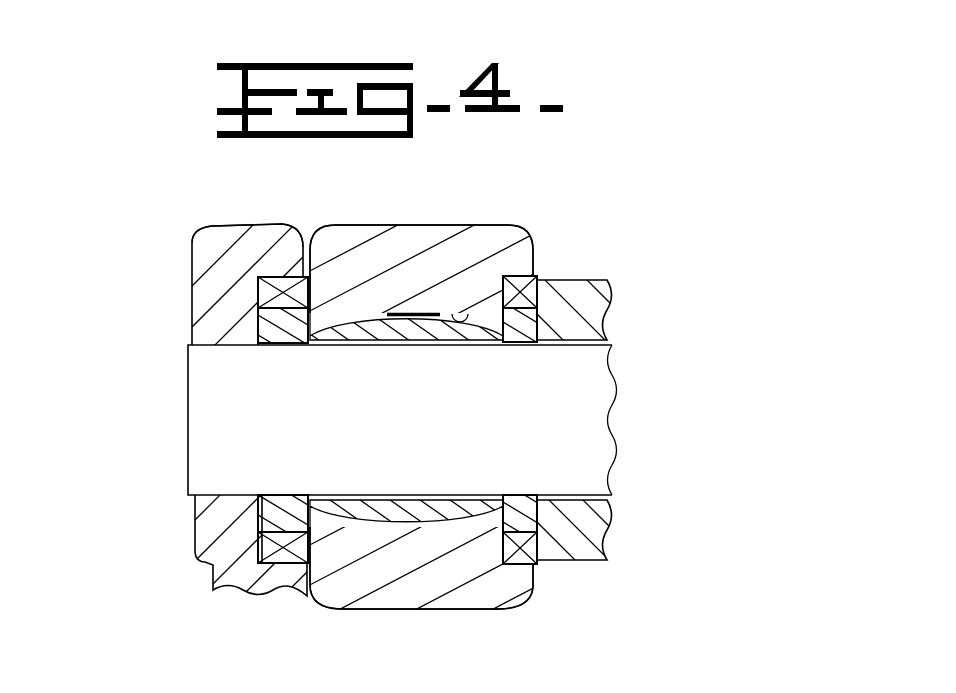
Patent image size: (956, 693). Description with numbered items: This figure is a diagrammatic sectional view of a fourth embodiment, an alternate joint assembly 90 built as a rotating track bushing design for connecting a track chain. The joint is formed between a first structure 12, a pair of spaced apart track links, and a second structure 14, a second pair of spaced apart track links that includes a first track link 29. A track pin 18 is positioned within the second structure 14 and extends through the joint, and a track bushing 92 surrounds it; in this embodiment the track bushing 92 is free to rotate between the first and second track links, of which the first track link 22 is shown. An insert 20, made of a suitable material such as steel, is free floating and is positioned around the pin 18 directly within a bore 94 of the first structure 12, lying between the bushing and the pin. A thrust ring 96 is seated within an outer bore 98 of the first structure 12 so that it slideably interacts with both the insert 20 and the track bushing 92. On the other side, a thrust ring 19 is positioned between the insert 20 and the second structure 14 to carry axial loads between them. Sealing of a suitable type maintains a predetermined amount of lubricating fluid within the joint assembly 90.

The first structure 12 is at (434, 211).
The second structure 14 is at (207, 219).
The track pin 18 is at (592, 409).
The thrust ring 19 is at (277, 346).
The insert 20 is at (400, 347).
The first track link 22 is at (378, 224).
The first track link 29 is at (252, 223).
The alternate joint assembly 90 is at (478, 346).
The track bushing 92 is at (603, 306).
The bore 94 is at (470, 311).
The thrust ring 96 is at (518, 326).
The outer bore 98 is at (528, 284).